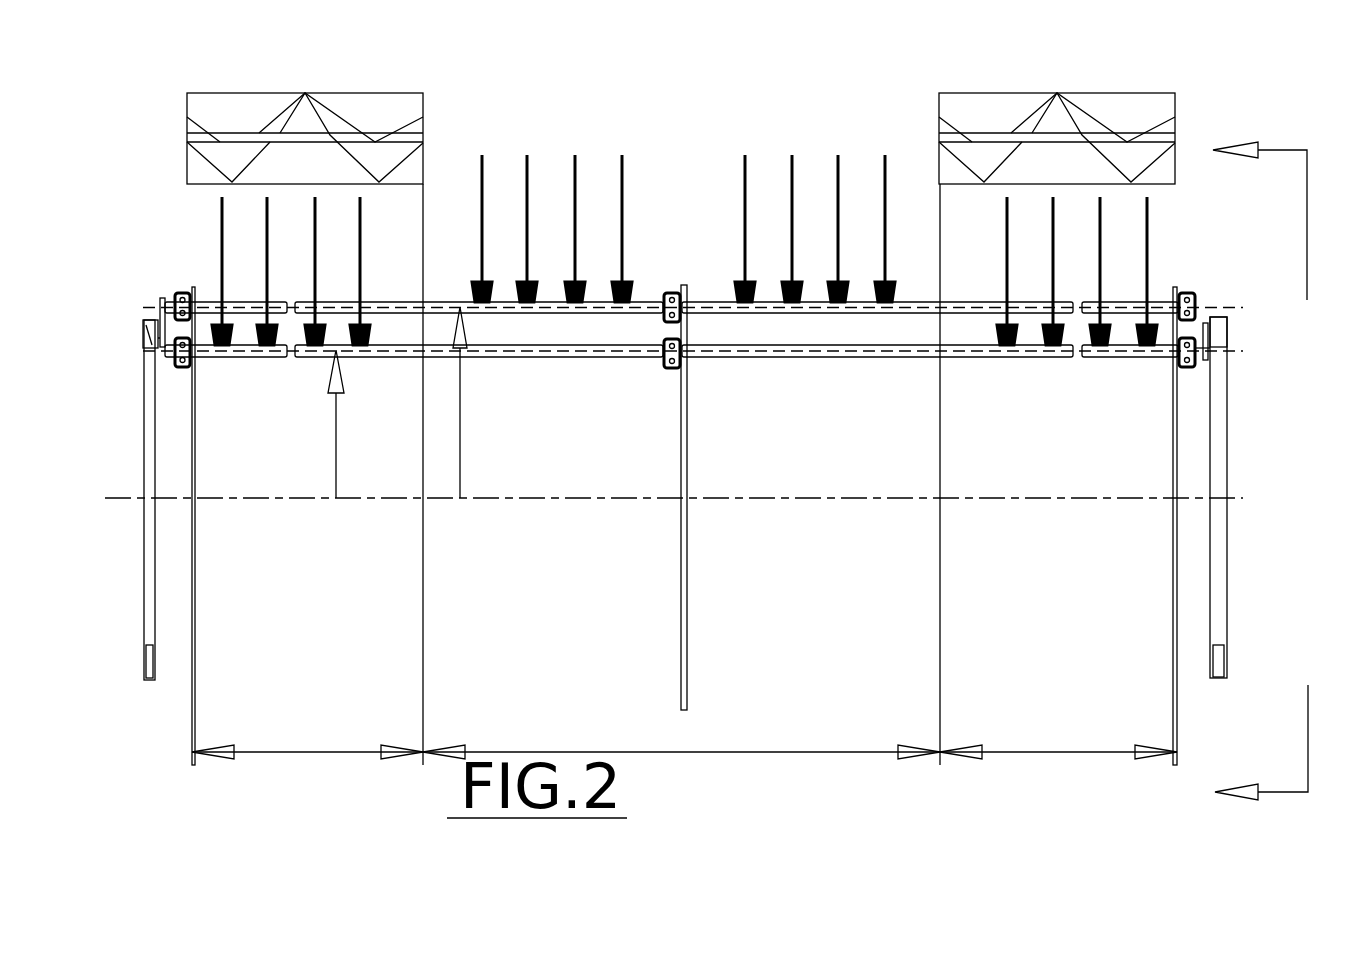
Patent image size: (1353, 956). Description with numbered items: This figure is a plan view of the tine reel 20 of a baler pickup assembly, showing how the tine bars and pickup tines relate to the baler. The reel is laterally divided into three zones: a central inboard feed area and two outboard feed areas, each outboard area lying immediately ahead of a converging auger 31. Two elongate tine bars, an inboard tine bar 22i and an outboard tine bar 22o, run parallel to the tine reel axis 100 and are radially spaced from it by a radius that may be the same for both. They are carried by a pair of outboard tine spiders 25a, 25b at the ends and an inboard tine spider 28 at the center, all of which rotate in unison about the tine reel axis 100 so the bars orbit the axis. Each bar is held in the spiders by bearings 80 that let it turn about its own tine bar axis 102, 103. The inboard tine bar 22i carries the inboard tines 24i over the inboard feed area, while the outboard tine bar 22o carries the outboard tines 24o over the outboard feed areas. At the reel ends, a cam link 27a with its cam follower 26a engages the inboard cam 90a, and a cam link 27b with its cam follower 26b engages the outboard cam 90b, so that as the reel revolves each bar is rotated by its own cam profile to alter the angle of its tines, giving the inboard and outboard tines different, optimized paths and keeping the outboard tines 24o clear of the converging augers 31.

The tine reel 20 is at (710, 86).
The inboard tine bar 22i is at (693, 308).
The outboard tine bar 22o is at (693, 376).
The inboard tine 24i is at (575, 155).
The outboard tine 24o is at (220, 222).
The outboard tine spider 25a is at (195, 600).
The outboard tine spider 25b is at (1173, 600).
The cam follower 26a is at (143, 322).
The cam follower 26b is at (1220, 335).
The cam link 27a is at (161, 298).
The cam link 27b is at (1205, 323).
The inboard tine spider 28 is at (687, 607).
The converging auger 31 is at (423, 133).
The bearing 80 is at (177, 291).
The inboard cam 90a is at (144, 410).
The outboard cam 90b is at (1227, 410).
The tine reel axis 100 is at (1235, 498).
The tine bar axis 102 is at (930, 308).
The tine bar axis 103 is at (566, 358).